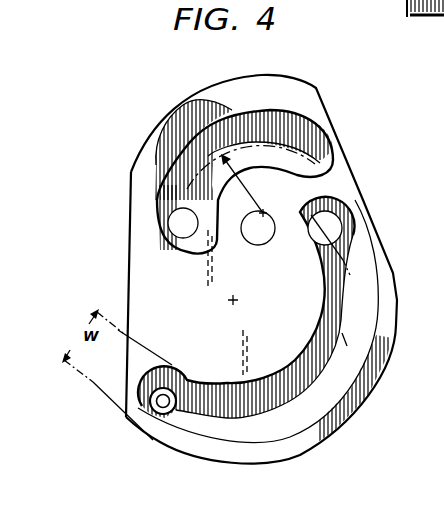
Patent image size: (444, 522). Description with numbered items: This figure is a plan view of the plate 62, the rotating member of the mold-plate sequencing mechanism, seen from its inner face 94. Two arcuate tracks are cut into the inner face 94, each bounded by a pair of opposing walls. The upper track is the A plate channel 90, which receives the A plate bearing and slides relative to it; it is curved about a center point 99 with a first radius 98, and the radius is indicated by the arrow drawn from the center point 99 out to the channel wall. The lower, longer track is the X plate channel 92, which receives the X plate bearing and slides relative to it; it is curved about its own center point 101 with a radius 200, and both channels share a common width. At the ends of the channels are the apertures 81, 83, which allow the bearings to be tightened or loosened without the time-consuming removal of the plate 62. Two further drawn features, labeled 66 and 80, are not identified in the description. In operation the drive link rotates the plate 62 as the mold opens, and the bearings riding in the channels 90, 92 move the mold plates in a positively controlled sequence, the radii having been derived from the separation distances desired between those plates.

The plate 62 is at (128, 137).
The pivot hole 66 is at (262, 246).
The pin hole 80 is at (161, 414).
The aperture 81 is at (337, 222).
The aperture 83 is at (170, 219).
The A plate channel 90 is at (237, 110).
The X plate channel 92 is at (368, 314).
The inner face 94 is at (147, 272).
The first radius 98 is at (242, 184).
The center point 99 is at (265, 211).
The center point 101 is at (232, 302).
The radius 200 is at (307, 382).